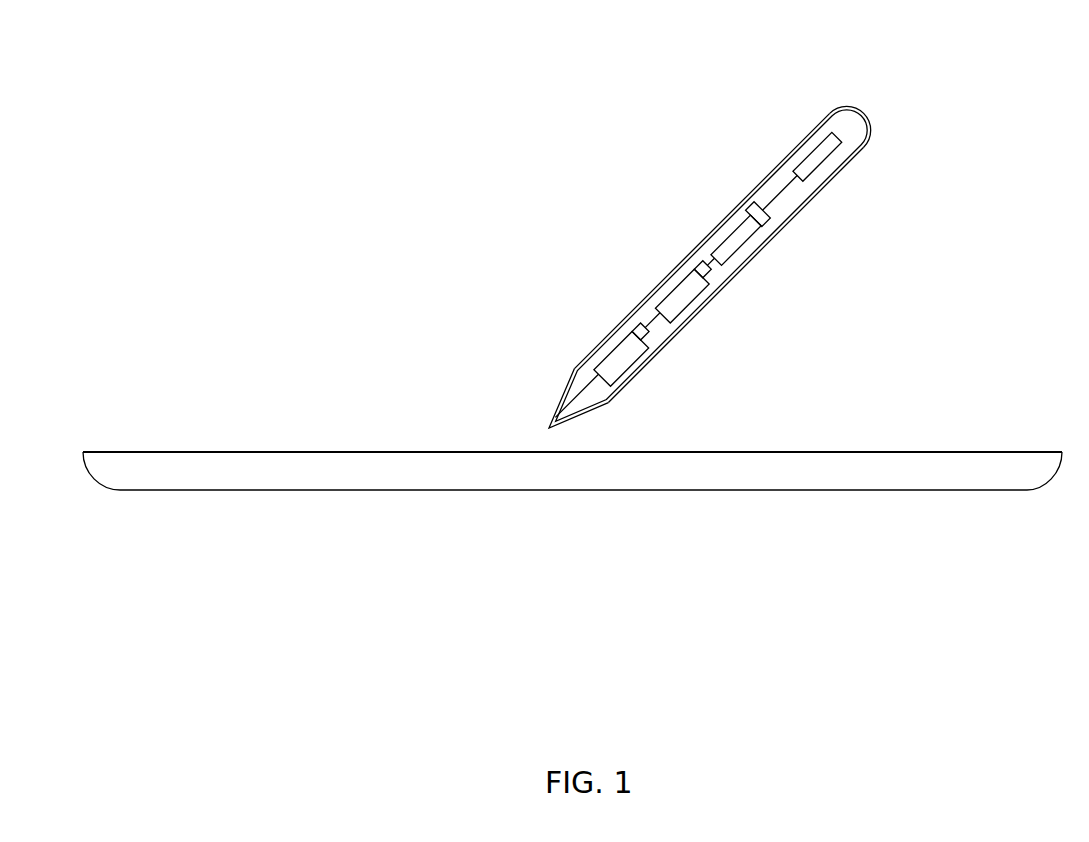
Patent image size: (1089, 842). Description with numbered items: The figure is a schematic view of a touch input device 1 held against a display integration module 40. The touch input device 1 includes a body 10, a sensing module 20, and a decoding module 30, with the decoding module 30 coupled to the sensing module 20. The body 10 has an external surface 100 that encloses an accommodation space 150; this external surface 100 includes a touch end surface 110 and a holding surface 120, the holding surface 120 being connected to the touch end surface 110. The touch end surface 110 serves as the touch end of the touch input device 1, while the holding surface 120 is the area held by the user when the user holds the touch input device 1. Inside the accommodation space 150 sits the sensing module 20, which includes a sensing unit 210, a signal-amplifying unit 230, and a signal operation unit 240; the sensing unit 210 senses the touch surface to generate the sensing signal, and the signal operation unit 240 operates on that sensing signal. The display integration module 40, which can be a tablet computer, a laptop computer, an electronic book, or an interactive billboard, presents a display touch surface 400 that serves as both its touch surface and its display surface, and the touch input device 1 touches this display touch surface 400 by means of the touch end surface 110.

The touch input device 1 is at (866, 126).
The external surface 100 is at (550, 190).
The touch end surface 110 is at (549, 427).
The holding surface 120 is at (689, 251).
The accommodation space 150 is at (826, 127).
The body 10 is at (793, 219).
The sensing module 20 is at (738, 218).
The sensing unit 210 is at (628, 348).
The signal-amplifying unit 230 is at (682, 298).
The signal operation unit 240 is at (735, 243).
The decoding module 30 is at (803, 169).
The display touch surface 400 is at (133, 452).
The display integration module 40 is at (206, 477).